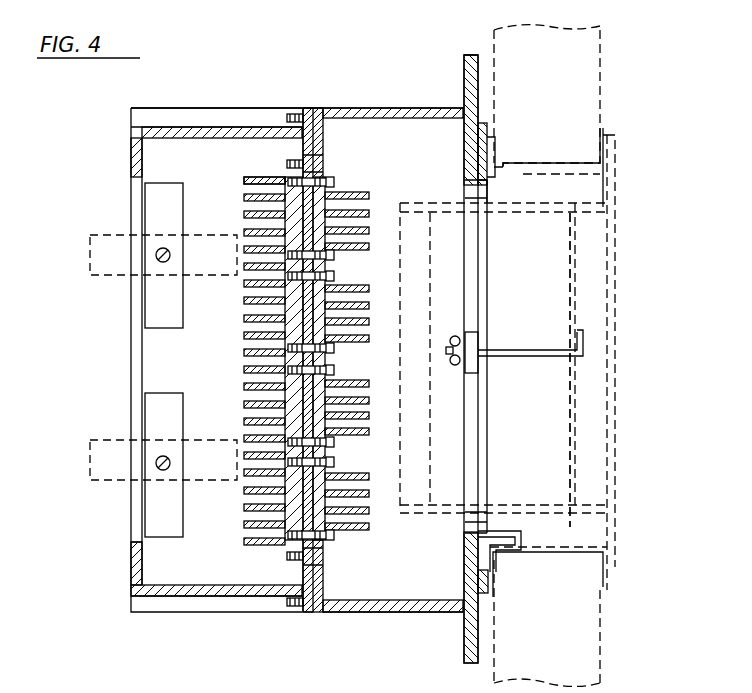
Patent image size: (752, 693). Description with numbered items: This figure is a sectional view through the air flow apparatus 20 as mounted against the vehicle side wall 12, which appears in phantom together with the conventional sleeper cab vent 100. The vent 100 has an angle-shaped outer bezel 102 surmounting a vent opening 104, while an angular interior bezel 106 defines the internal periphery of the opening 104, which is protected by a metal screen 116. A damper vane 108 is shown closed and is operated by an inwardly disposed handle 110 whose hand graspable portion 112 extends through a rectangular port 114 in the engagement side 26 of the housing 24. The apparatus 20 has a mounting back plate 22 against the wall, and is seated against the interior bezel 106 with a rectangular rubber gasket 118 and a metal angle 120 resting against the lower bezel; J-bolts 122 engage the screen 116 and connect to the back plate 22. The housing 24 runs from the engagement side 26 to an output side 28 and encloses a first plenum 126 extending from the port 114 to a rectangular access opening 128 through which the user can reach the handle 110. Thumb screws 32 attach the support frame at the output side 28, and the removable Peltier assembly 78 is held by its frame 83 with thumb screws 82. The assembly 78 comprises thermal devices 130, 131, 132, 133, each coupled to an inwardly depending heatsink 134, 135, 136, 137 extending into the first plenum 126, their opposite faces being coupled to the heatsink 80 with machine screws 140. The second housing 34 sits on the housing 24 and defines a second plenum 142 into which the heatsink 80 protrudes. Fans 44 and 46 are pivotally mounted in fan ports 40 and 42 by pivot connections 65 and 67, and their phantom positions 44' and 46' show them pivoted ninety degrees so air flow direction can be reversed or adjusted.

The side wall 12 is at (585, 68).
The air flow apparatus 20 is at (356, 76).
The mounting back plate 22 is at (463, 66).
The housing 24 is at (407, 622).
The engagement side 26 is at (471, 53).
The output side 28 is at (314, 98).
The thumb screws 32 is at (292, 114).
The second housing 34 is at (217, 85).
The fan port 40 is at (130, 325).
The fan port 42 is at (137, 548).
The electric motor driven fan 44 is at (137, 255).
The pivoted fan position 44' is at (136, 239).
The electric motor driven fan 46 is at (135, 465).
The pivoted fan position 46' is at (138, 450).
The pivot connection 65 is at (156, 255).
The pivot connection 67 is at (156, 462).
The Peltier assembly 78 is at (333, 168).
The heatsink 80 is at (248, 180).
The thumb screw 82 is at (287, 164).
The frame 83 is at (300, 161).
The vent 100 is at (690, 390).
The outer bezel 102 is at (608, 135).
The vent opening 104 is at (495, 300).
The interior bezel 106 is at (487, 143).
The vane 108 is at (617, 330).
The handle 110 is at (447, 203).
The hand graspable portion 112 is at (422, 258).
The rectangular port 114 is at (472, 280).
The metal screen 116 is at (572, 455).
The rubber gasket 118 is at (482, 122).
The metal angle 120 is at (510, 533).
The J-bolts 122 is at (512, 357).
The first plenum 126 is at (422, 130).
The access opening 128 is at (322, 544).
The thermal device 130 is at (322, 186).
The thermal device 131 is at (323, 278).
The thermal device 132 is at (323, 371).
The thermal device 133 is at (305, 513).
The heatsink 134 is at (334, 186).
The heatsink 135 is at (400, 313).
The heatsink 136 is at (400, 405).
The heatsink 137 is at (335, 531).
The machine screws 140 is at (332, 462).
The second plenum 142 is at (185, 570).